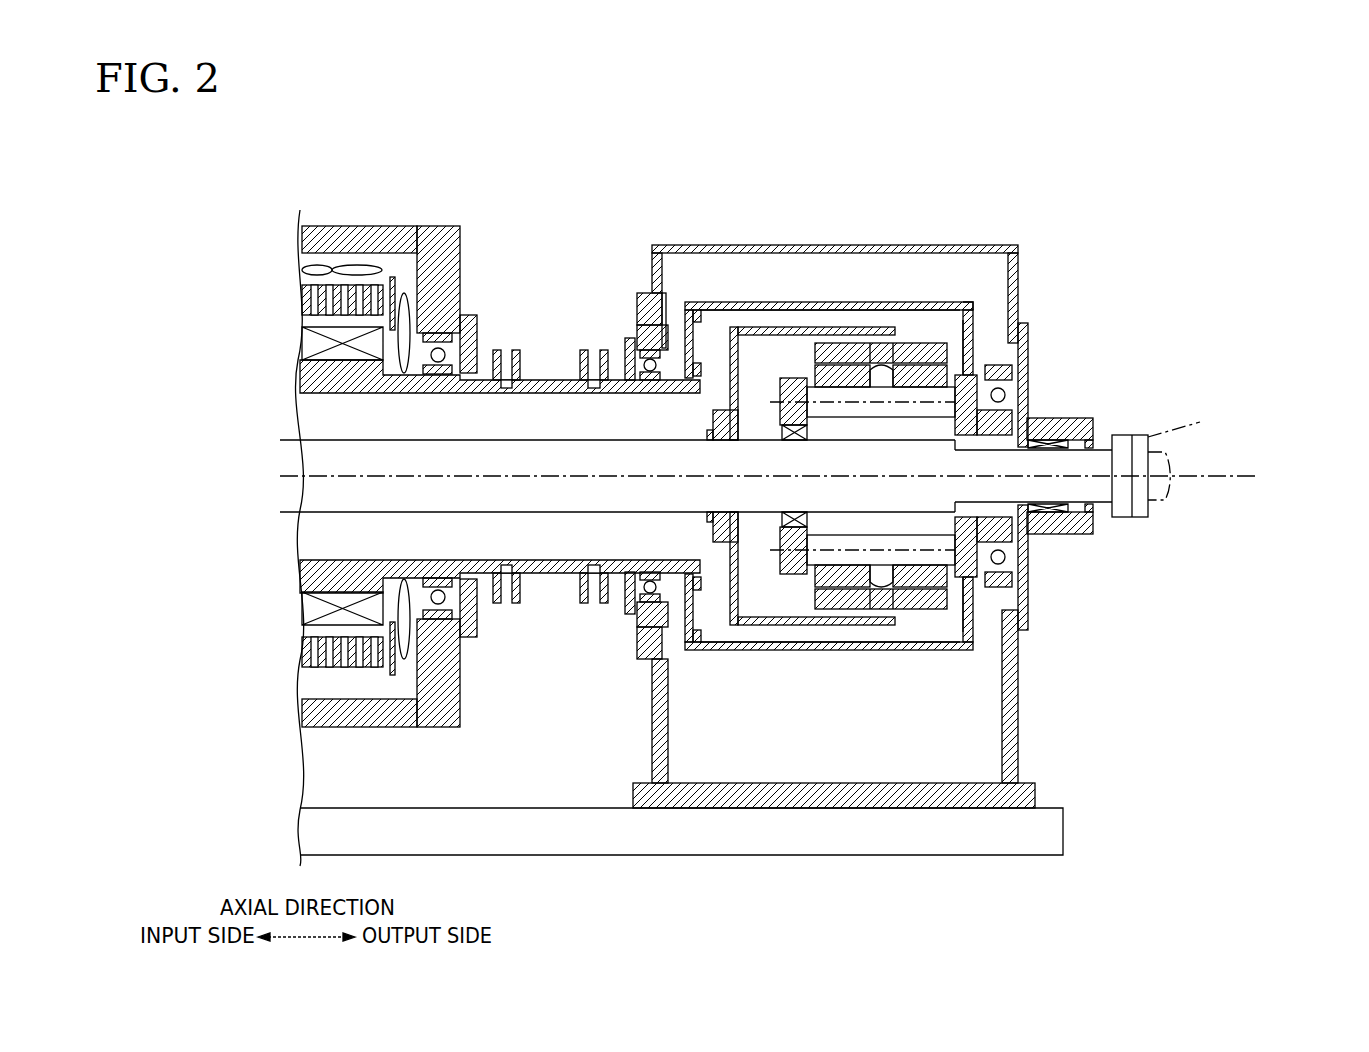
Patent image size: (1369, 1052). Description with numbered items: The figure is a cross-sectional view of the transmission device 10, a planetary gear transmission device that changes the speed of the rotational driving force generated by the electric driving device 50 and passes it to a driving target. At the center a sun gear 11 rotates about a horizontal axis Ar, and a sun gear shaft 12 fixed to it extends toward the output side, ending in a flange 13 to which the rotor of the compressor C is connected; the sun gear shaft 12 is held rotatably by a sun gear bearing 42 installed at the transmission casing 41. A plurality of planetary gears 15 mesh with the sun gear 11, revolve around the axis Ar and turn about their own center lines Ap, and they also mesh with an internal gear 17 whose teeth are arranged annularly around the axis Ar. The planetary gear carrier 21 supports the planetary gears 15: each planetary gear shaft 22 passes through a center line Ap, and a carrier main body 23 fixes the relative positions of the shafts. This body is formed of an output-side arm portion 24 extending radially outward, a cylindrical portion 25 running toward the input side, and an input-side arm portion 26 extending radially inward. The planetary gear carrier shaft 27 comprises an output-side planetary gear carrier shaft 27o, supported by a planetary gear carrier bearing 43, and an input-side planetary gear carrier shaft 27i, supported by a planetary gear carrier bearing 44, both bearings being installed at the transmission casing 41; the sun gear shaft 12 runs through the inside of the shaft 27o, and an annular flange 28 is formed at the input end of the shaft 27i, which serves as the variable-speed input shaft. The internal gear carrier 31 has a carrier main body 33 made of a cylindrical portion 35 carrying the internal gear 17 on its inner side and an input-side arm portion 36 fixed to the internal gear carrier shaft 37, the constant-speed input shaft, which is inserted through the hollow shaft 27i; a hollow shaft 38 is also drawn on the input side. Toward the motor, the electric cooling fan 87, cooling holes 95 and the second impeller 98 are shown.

The transmission device 10 is at (1010, 232).
The sun gear 11 is at (937, 497).
The sun gear shaft 12 is at (1102, 493).
The flange 13 is at (1120, 517).
The planetary gears 15 is at (822, 373).
The internal gear 17 is at (930, 358).
The planetary gear carrier 21 is at (948, 295).
The planetary gear shaft 22 is at (847, 393).
The carrier main body 23 is at (722, 303).
The output-side arm portion 24 is at (972, 322).
The cylindrical portion 25 is at (873, 304).
The input-side arm portion 26 is at (683, 316).
The planetary gear carrier shaft 27 is at (858, 230).
The input-side planetary gear carrier shaft 27i is at (665, 345).
The output-side planetary gear carrier shaft 27o is at (1005, 372).
The annular flange 28 is at (628, 343).
The internal gear carrier 31 is at (728, 598).
The carrier main body 33 is at (805, 893).
The cylindrical portion 35 is at (793, 626).
The input-side arm portion 36 is at (727, 582).
The internal gear carrier shaft 37 is at (672, 500).
The hollow shaft 38 is at (608, 540).
The transmission casing 41 is at (650, 243).
The sun gear bearing 42 is at (1057, 505).
The planetary gear carrier bearing 43 is at (1008, 395).
The planetary gear carrier bearing 44 is at (635, 358).
The electric driving device 50 is at (353, 216).
The electric cooling fan 87 is at (372, 256).
The cooling holes 95 is at (550, 380).
The second impeller 98 is at (405, 318).
The center line Ap is at (957, 362).
The axis Ar is at (1207, 475).
The compressor C is at (1160, 437).